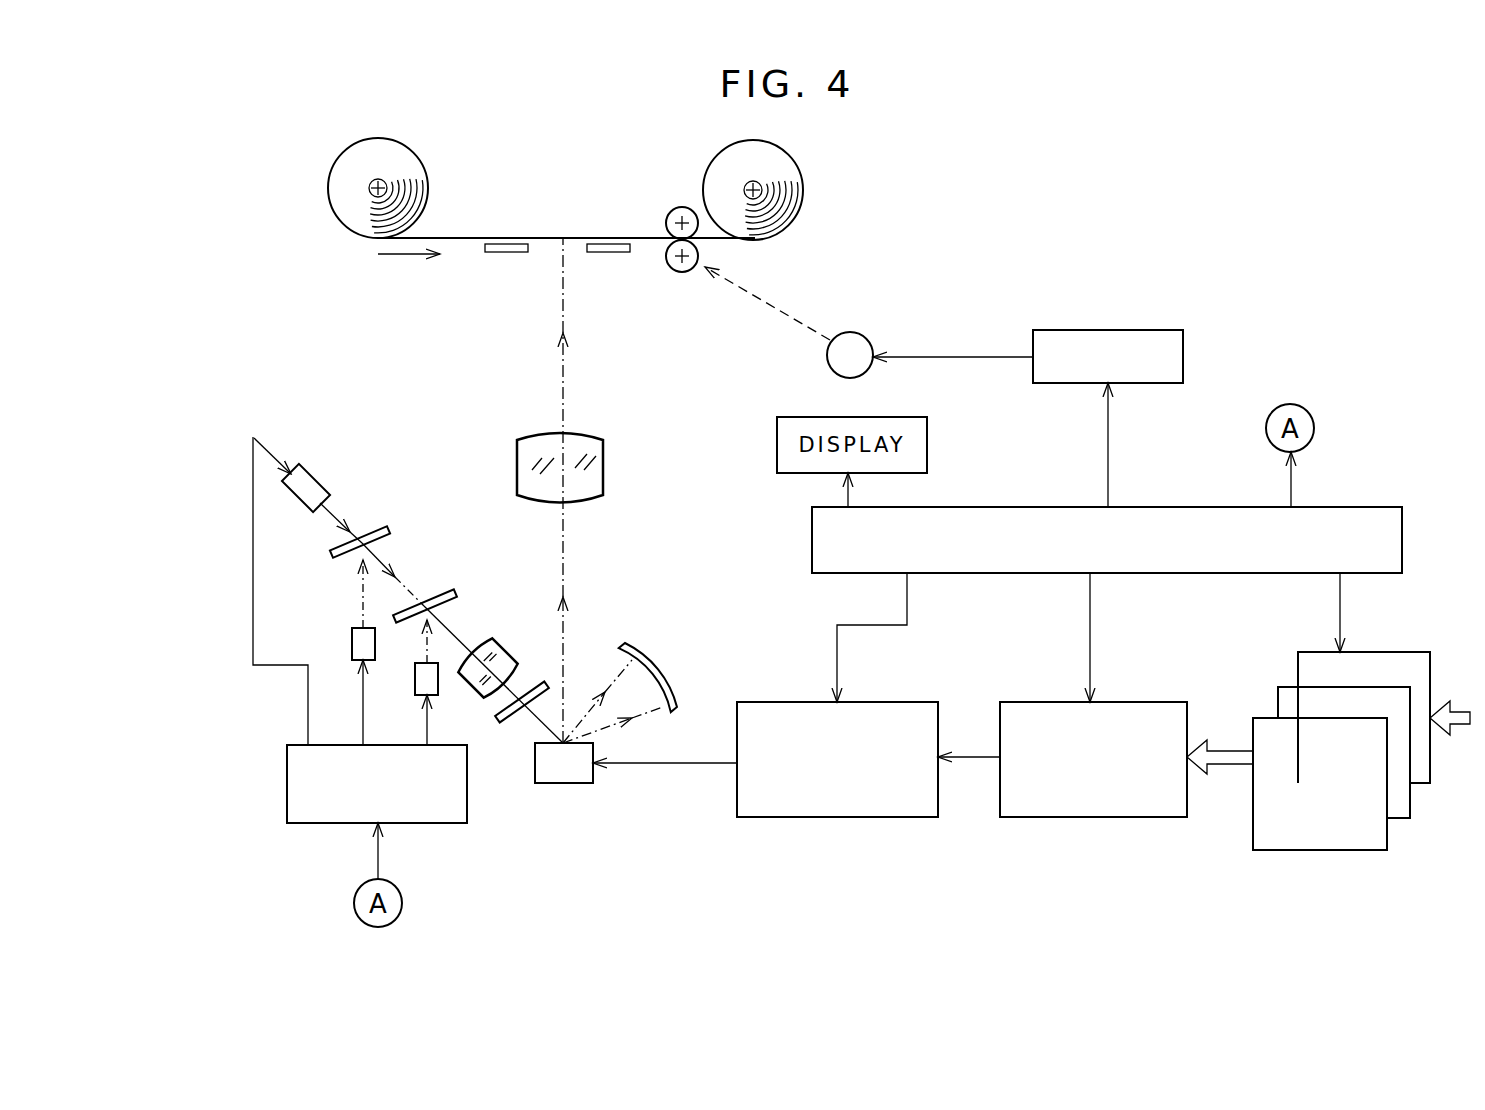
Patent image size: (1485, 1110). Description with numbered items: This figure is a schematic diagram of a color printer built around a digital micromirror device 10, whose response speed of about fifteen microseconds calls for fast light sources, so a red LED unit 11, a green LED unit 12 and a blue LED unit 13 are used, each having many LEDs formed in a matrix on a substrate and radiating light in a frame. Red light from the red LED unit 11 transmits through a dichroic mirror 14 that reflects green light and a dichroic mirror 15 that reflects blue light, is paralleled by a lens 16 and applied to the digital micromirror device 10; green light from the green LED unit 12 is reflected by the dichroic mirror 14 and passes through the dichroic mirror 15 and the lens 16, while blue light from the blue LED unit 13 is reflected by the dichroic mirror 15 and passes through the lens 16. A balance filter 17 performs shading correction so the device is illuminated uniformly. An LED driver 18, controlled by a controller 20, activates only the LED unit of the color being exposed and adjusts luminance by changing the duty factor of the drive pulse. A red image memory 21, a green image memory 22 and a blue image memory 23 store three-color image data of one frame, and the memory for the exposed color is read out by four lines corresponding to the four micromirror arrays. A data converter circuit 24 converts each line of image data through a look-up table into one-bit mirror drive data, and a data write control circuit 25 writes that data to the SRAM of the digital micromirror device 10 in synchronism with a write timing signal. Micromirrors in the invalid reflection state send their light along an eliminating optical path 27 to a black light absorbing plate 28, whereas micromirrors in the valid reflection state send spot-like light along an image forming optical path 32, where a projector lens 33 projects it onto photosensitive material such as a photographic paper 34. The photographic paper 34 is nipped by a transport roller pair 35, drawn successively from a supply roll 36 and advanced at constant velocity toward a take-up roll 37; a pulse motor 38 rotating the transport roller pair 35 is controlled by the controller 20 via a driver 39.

The digital micromirror device 10 is at (565, 783).
The red LED unit 11 is at (315, 467).
The green LED unit 12 is at (352, 640).
The blue LED unit 13 is at (415, 682).
The dichroic mirror 14 is at (380, 528).
The dichroic mirror 15 is at (432, 592).
The lens 16 is at (495, 635).
The balance filter 17 is at (515, 722).
The LED driver 18 is at (287, 783).
The controller 20 is at (1006, 507).
The red image memory 21 is at (1253, 718).
The green image memory 22 is at (1283, 687).
The blue image memory 23 is at (1315, 652).
The data converter circuit 24 is at (1145, 702).
The data write control circuit 25 is at (918, 702).
The eliminating optical path 27 is at (618, 729).
The light absorbing plate 28 is at (655, 655).
The image forming optical path 32 is at (560, 365).
The projector lens 33 is at (572, 440).
The photographic paper 34 is at (552, 238).
The transport roller pair 35 is at (684, 275).
The supply roll 36 is at (345, 160).
The take-up roll 37 is at (783, 165).
The pulse motor 38 is at (850, 332).
The driver 39 is at (1107, 330).